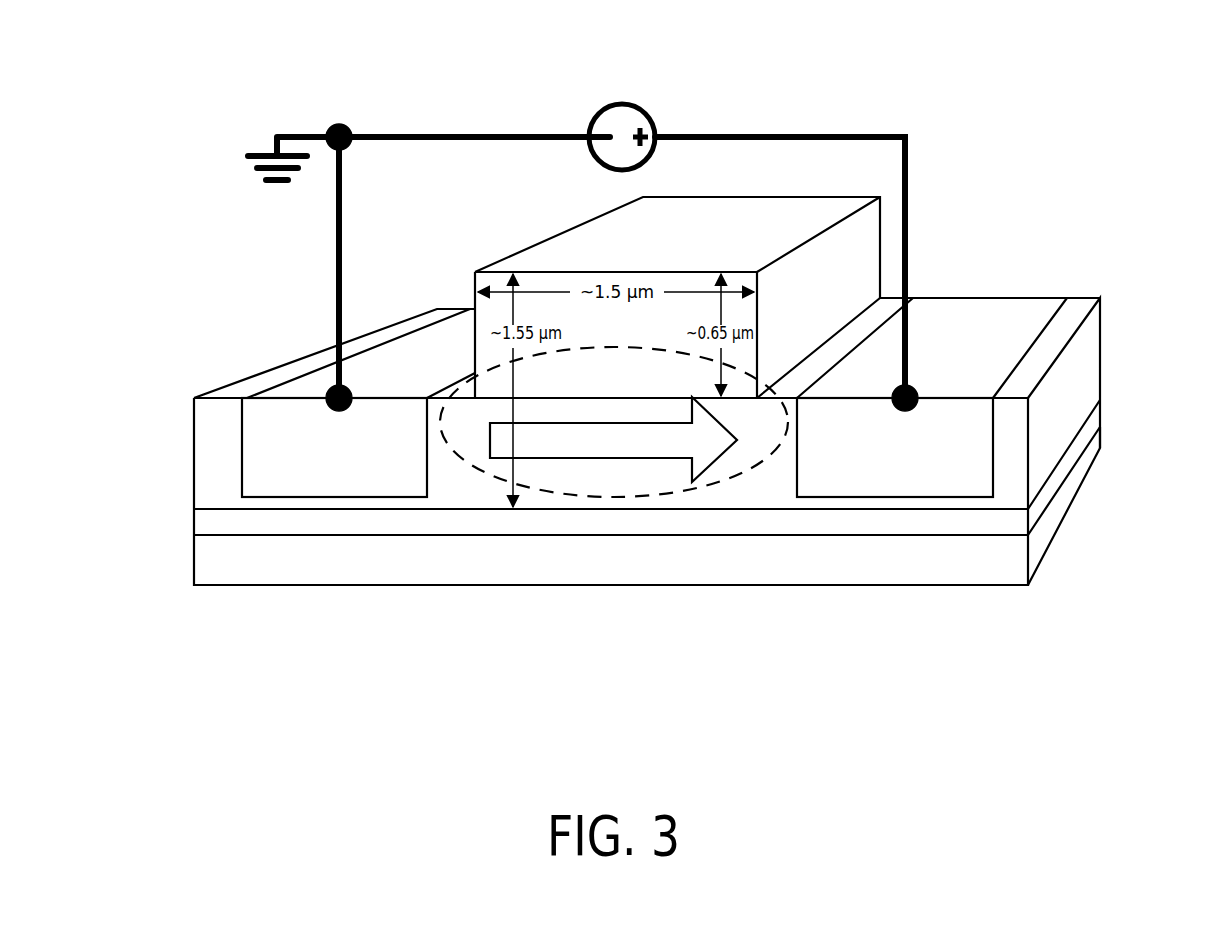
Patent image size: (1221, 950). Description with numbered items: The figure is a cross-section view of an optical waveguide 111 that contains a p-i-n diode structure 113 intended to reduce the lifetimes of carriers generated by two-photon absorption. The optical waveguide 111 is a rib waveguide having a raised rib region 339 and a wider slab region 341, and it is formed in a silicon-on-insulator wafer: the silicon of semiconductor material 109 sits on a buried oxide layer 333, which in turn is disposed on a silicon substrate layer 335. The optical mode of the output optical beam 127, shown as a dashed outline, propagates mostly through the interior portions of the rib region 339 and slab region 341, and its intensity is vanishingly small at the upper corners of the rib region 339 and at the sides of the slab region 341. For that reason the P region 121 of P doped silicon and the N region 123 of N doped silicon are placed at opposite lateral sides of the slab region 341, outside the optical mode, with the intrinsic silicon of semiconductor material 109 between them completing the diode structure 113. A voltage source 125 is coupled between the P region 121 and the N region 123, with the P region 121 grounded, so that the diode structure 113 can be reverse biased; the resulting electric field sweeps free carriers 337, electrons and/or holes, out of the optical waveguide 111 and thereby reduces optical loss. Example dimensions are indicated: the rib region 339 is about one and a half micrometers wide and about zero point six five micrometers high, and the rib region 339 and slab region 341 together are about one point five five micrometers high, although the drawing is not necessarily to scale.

The semiconductor material 109 is at (1092, 373).
The optical waveguide 111 is at (487, 378).
The diode structure 113 is at (990, 108).
The P region 121 is at (253, 445).
The N region 123 is at (975, 468).
The voltage source 125 is at (597, 102).
The output optical beam 127 is at (747, 478).
The buried oxide layer 333 is at (557, 523).
The silicon substrate layer 335 is at (643, 560).
The free carriers 337 is at (628, 460).
The rib region 339 is at (495, 303).
The slab region 341 is at (468, 497).